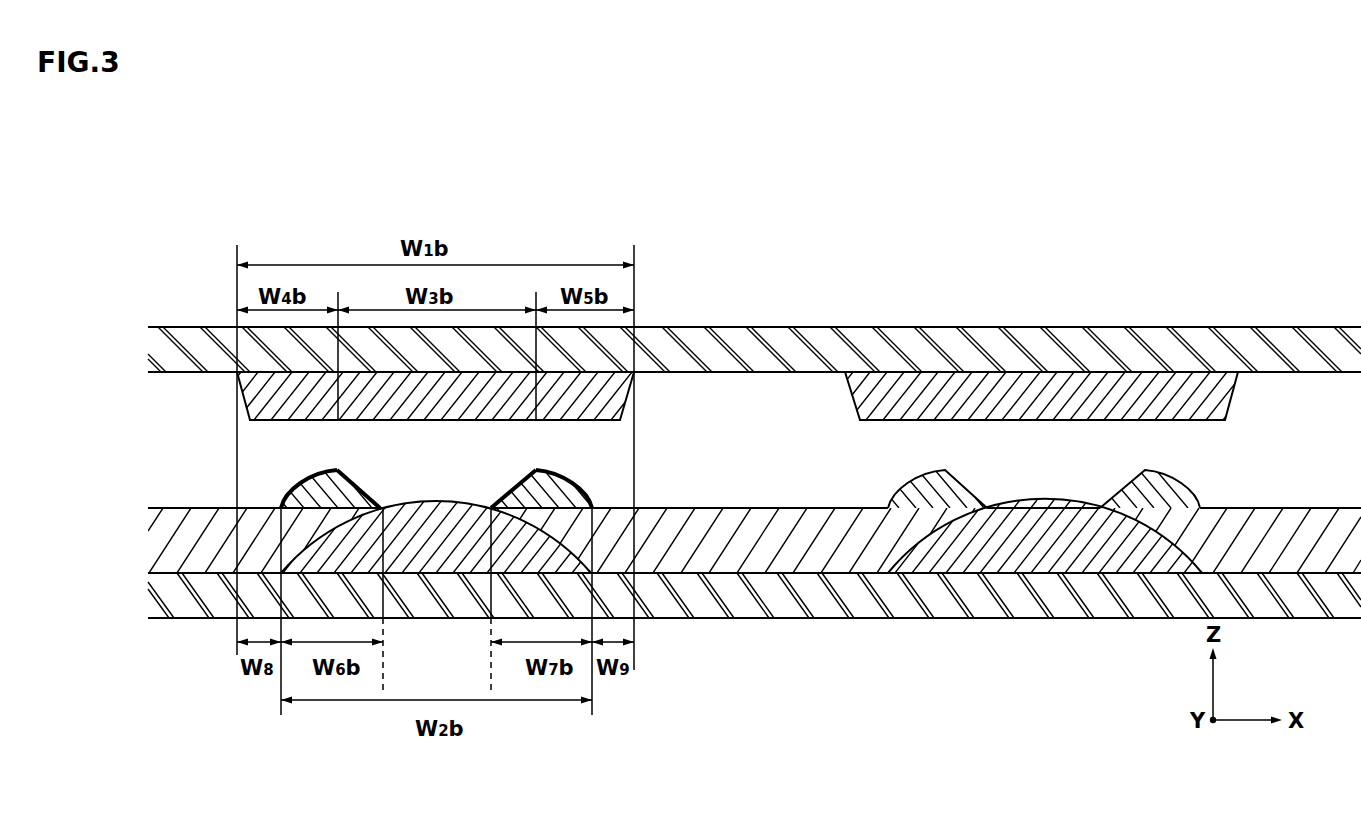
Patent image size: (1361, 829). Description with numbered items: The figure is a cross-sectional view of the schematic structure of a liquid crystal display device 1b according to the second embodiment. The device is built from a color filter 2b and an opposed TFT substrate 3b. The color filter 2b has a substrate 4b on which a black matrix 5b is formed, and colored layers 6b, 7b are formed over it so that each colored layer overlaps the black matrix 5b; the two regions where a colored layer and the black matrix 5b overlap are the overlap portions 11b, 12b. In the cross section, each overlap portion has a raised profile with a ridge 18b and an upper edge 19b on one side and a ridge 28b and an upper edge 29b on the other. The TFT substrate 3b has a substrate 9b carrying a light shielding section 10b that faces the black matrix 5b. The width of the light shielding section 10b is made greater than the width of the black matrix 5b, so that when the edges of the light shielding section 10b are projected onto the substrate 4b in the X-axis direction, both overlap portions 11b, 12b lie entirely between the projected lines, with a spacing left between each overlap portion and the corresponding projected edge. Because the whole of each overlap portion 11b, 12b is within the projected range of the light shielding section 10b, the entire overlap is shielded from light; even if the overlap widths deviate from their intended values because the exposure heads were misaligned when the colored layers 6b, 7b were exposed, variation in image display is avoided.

The liquid crystal display device 1b is at (143, 226).
The color filter 2b is at (157, 505).
The TFT substrate 3b is at (157, 323).
The substrate 4b is at (705, 618).
The black matrix 5b is at (432, 565).
The colored layer 6b is at (192, 565).
The colored layer 7b is at (690, 508).
The substrate 9b is at (690, 327).
The light shielding section 10b is at (624, 410).
The overlap portion 11b is at (383, 469).
The overlap portion 12b is at (595, 469).
The ridge 18b is at (290, 490).
The upper edge 19b is at (343, 469).
The ridge 28b is at (594, 490).
The upper edge 29b is at (528, 470).